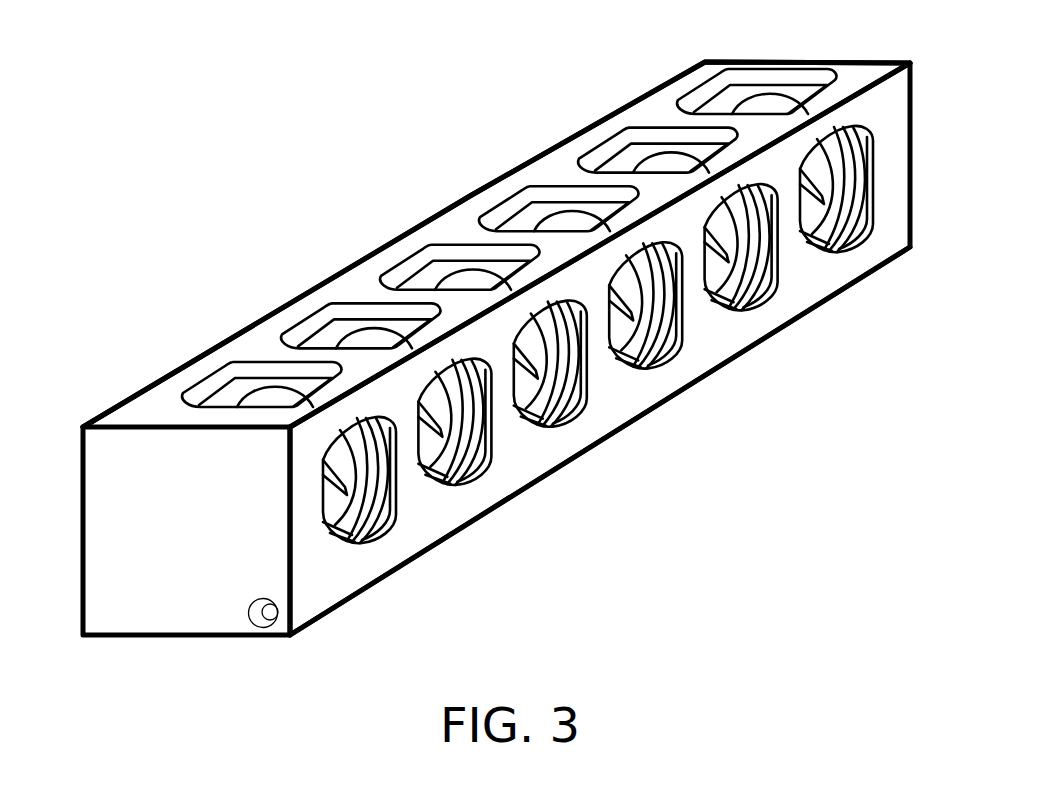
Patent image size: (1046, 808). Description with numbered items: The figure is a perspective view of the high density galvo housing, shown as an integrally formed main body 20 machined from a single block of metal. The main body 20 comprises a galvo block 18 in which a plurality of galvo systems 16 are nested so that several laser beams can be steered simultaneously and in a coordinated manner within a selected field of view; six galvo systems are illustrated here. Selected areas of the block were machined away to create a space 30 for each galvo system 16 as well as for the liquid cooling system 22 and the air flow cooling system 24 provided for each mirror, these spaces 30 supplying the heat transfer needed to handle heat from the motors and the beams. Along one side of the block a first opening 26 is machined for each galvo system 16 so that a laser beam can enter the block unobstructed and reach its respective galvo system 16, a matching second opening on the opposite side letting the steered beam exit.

The galvo system 16 is at (333, 492).
The galvo block 18 is at (613, 550).
The main body 20 is at (648, 110).
The liquid cooling system 22 is at (615, 412).
The air flow cooling system 24 is at (630, 282).
The first opening 26 is at (848, 212).
The space 30 is at (465, 285).